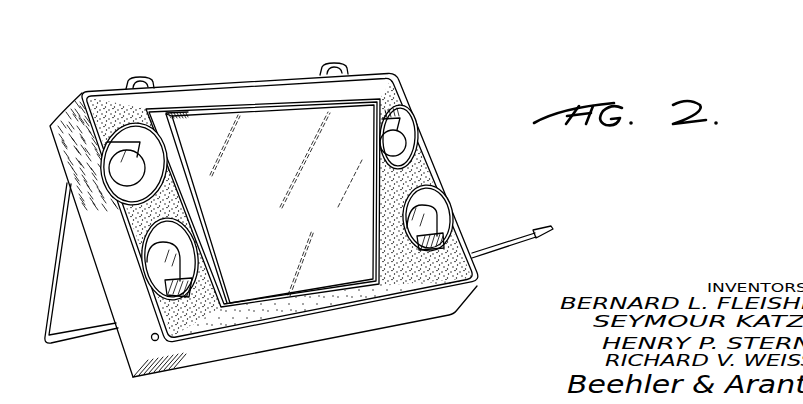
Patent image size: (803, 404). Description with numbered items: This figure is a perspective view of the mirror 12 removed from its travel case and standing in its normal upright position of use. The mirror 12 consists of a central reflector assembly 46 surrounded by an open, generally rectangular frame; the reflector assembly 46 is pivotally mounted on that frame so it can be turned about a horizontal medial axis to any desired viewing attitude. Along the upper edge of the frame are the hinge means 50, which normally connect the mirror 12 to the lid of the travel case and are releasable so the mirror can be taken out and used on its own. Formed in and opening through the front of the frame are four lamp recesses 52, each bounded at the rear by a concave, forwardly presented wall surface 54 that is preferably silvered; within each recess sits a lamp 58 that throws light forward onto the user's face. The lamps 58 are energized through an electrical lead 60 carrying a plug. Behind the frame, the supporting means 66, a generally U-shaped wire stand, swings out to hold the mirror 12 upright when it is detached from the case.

The mirror 12 is at (415, 104).
The reflector assembly 46 is at (257, 123).
The hinge means 50 is at (142, 75).
The lamp recesses 52 is at (412, 130).
The concave wall surfaces 54 is at (410, 156).
The lamp 58 is at (430, 213).
The electrical lead 60 is at (503, 242).
The supporting means 66 is at (88, 338).